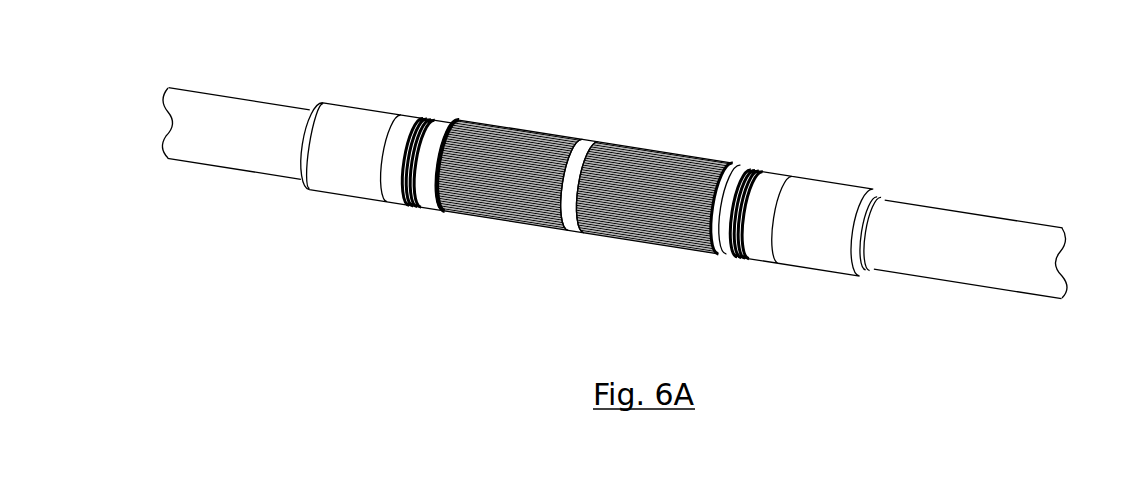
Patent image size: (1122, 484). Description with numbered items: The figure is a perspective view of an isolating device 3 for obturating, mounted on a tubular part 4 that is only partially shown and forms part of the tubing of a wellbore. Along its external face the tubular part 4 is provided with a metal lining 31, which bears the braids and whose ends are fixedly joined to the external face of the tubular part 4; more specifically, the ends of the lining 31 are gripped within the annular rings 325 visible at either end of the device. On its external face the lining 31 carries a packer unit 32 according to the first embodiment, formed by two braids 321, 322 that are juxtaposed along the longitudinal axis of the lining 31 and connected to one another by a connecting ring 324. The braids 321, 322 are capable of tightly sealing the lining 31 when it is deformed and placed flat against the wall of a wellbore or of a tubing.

The isolating device 3 is at (978, 136).
The tubular part 4 is at (1025, 235).
The metal lining 31 is at (448, 128).
The packer unit 32 is at (645, 136).
The braid 321 is at (548, 136).
The braid 322 is at (648, 248).
The connecting ring 324 is at (580, 237).
The annular rings 325 is at (398, 122).